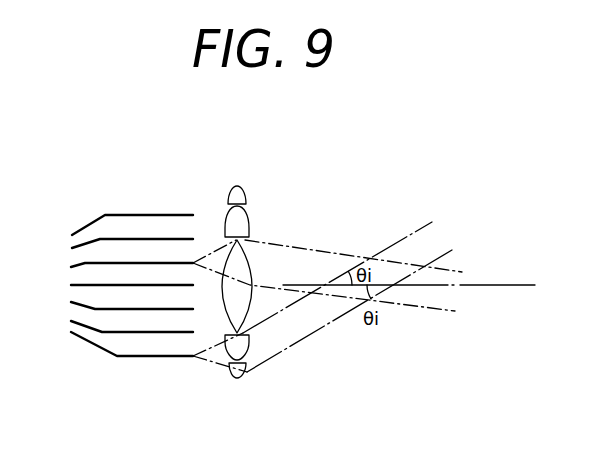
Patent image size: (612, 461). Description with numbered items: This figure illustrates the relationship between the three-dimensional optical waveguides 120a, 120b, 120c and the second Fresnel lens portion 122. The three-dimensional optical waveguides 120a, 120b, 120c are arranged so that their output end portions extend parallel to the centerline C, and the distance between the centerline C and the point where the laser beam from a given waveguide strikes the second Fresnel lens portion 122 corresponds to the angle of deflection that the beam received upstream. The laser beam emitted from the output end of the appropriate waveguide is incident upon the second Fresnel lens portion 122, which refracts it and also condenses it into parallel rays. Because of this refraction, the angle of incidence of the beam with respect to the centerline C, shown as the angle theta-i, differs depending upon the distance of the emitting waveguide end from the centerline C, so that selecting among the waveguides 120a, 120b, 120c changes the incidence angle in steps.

The three-dimensional optical waveguide 120a is at (163, 215).
The three-dimensional optical waveguide 120b is at (132, 239).
The three-dimensional optical waveguide 120c is at (108, 263).
The second Fresnel lens portion 122 is at (243, 176).
The centerline C is at (512, 285).